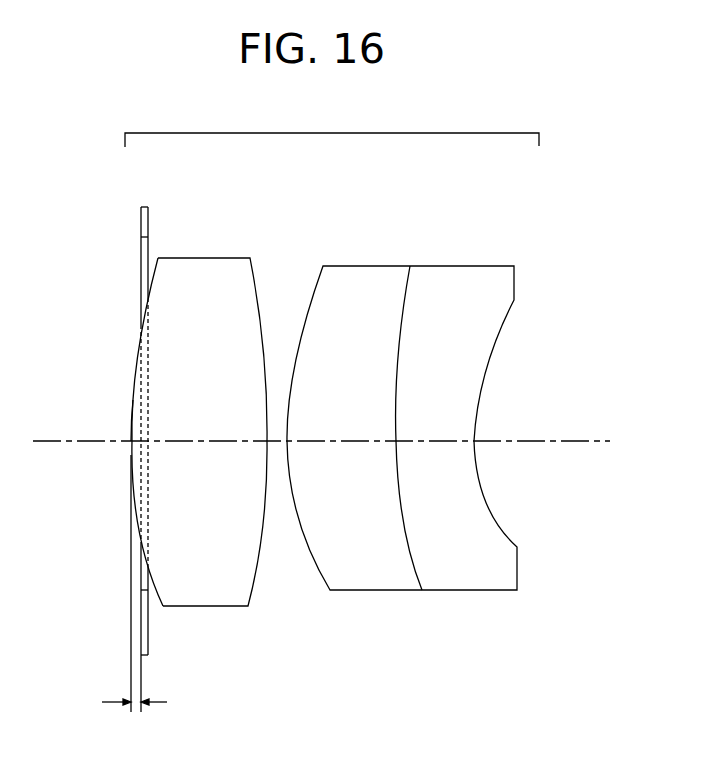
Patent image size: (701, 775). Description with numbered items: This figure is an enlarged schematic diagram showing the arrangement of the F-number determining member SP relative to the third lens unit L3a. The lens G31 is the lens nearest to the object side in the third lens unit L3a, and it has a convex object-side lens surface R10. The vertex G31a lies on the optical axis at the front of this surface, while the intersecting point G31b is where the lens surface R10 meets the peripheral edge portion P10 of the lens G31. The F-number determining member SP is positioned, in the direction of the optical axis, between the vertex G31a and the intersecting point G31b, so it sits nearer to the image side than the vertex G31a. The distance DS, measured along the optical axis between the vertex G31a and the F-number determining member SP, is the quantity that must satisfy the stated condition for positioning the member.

The F-number determining member SP is at (140, 223).
The lens G31 is at (152, 388).
The vertex of object-side lens surface G31a is at (131, 445).
The intersecting point G31b is at (156, 262).
The object-side lens surface R10 is at (131, 412).
The edge portion P10 is at (240, 258).
The third lens unit L3a is at (332, 122).
The distance DS is at (154, 586).